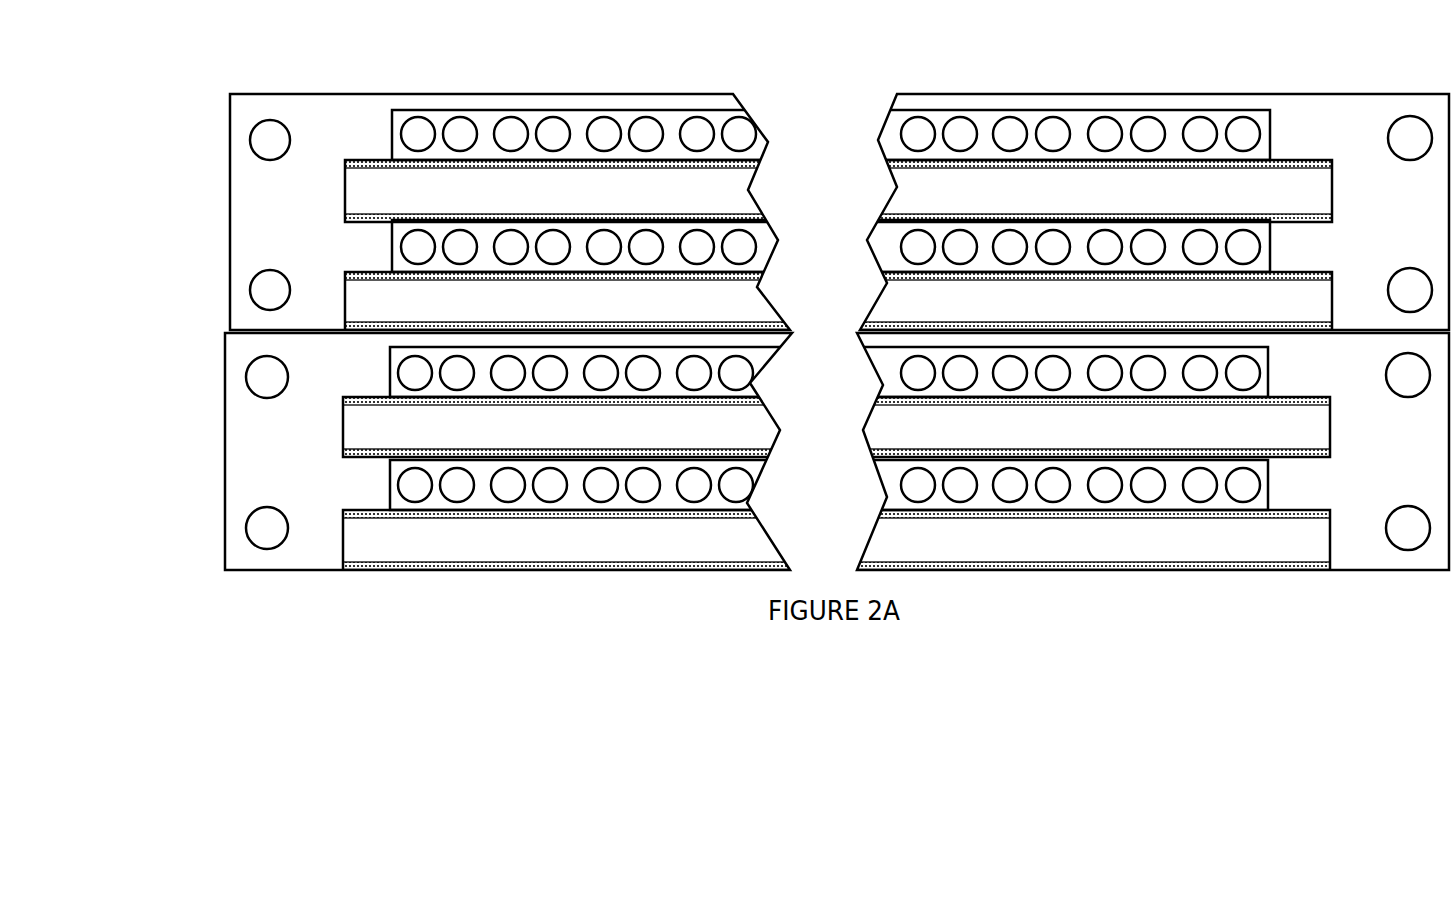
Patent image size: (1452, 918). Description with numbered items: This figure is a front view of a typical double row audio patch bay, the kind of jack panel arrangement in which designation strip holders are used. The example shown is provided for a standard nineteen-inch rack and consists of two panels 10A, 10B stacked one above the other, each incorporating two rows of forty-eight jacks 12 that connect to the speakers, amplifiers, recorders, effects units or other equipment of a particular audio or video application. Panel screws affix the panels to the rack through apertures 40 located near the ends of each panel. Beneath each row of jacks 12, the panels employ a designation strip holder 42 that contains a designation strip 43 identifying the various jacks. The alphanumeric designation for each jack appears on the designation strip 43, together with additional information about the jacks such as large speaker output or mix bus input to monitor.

The panel 10A is at (248, 318).
The panel 10B is at (245, 447).
The jacks 12 is at (420, 132).
The apertures 40 is at (272, 143).
The designation strip holder 42 is at (345, 161).
The designation strip 43 is at (345, 190).